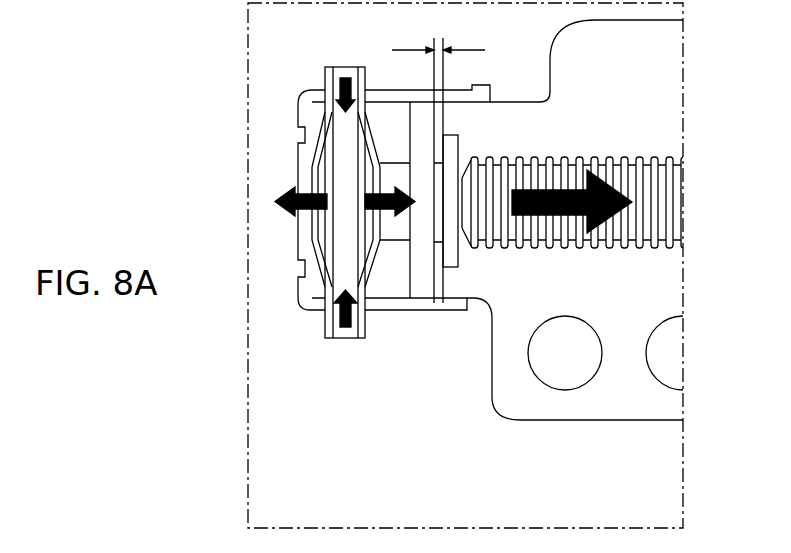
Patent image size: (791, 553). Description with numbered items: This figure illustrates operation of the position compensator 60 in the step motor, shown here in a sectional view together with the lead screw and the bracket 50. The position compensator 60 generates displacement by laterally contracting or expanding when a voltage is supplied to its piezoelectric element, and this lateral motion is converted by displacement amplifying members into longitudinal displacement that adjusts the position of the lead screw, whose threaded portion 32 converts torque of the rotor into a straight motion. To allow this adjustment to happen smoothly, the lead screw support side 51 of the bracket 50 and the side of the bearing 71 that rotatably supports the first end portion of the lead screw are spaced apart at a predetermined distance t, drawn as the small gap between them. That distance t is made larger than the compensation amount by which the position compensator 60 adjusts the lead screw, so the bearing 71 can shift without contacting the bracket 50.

The threaded portion 32 is at (650, 247).
The bracket 50 is at (632, 345).
The lead screw support side 51 is at (420, 283).
The position compensator 60 is at (353, 340).
The bearing 71 is at (450, 262).